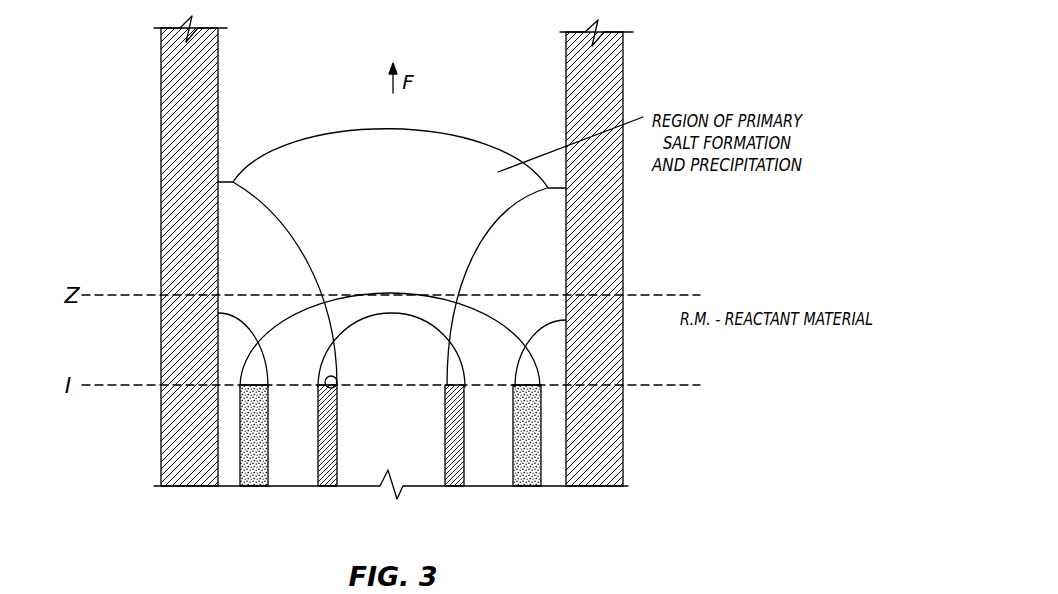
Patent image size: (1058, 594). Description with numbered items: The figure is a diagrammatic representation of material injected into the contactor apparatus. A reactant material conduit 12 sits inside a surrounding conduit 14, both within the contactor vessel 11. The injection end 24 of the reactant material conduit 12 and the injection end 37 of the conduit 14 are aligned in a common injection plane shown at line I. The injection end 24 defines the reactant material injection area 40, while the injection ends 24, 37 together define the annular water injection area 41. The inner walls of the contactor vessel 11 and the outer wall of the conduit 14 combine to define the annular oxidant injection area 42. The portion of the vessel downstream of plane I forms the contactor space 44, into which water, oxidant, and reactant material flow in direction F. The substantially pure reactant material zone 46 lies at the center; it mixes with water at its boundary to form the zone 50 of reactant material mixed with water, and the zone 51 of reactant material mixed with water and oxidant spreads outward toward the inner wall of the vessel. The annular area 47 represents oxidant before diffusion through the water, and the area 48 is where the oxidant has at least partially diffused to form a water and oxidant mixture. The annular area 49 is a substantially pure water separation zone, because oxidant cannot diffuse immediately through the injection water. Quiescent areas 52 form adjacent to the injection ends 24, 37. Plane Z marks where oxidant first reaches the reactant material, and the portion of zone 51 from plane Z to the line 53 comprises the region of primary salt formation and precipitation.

The contactor vessel 11 is at (162, 83).
The reactant material conduit 12 is at (337, 458).
The conduit 14 is at (533, 470).
The injection end of reactant material conduit 24 is at (334, 386).
The injection end of conduit 37 is at (529, 382).
The reactant material injection area 40 is at (413, 390).
The water injection area 41 is at (292, 387).
The annular oxidant injection area 42 is at (240, 387).
The contactor space 44 is at (278, 80).
The substantially pure reactant material zone 46 is at (375, 374).
The area of oxidant prior to diffusion 47 is at (228, 333).
The area of water and oxidant mixture 48 is at (234, 234).
The substantially pure water zone 49 is at (305, 376).
The zone of reactant material mixed with water 50 is at (373, 303).
The zone of reactant material mixed with water and oxidant 51 is at (376, 212).
The quiescent areas 52 is at (253, 378).
The line 53 is at (475, 137).